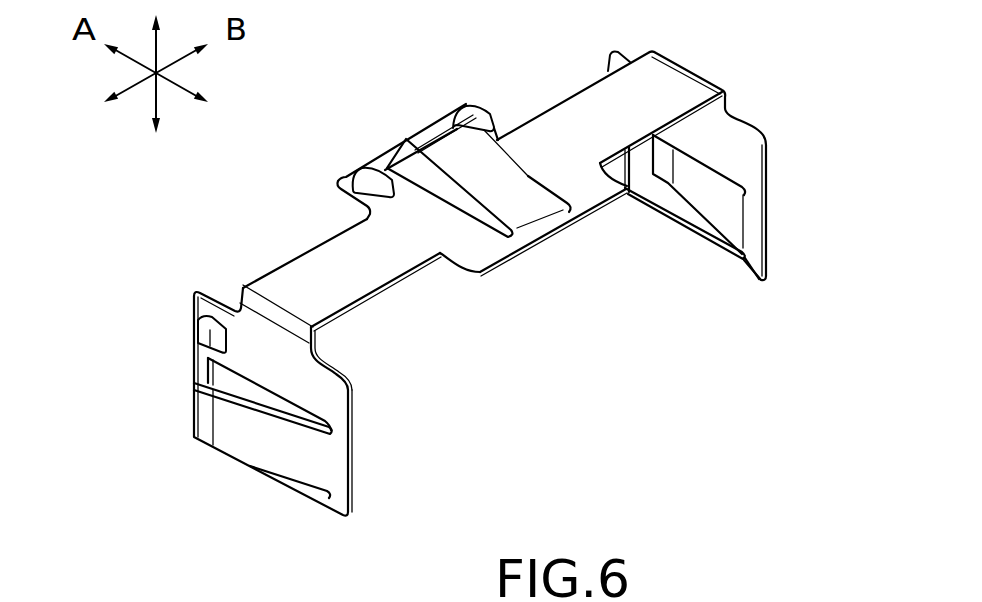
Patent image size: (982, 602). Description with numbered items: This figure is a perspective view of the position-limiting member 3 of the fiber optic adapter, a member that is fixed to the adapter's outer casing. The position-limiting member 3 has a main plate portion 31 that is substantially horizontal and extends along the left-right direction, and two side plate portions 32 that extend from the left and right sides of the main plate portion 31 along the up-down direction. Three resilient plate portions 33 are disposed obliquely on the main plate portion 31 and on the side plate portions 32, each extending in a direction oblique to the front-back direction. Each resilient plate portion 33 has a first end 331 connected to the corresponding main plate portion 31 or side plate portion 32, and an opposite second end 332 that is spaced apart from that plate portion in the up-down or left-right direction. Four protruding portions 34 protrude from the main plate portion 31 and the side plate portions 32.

The position-limiting member 3 is at (687, 390).
The main plate portion 31 is at (588, 102).
The side plate portions 32 is at (748, 162).
The resilient plate portions 33 is at (429, 103).
The first end 331 is at (518, 205).
The second end 332 is at (421, 137).
The protruding portions 34 is at (474, 113).